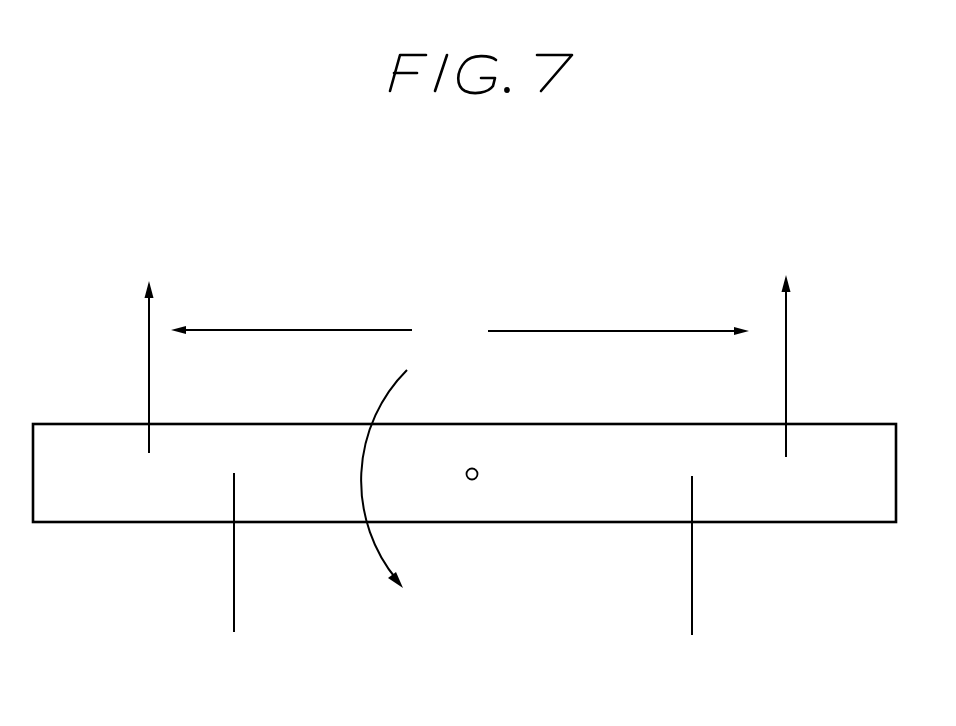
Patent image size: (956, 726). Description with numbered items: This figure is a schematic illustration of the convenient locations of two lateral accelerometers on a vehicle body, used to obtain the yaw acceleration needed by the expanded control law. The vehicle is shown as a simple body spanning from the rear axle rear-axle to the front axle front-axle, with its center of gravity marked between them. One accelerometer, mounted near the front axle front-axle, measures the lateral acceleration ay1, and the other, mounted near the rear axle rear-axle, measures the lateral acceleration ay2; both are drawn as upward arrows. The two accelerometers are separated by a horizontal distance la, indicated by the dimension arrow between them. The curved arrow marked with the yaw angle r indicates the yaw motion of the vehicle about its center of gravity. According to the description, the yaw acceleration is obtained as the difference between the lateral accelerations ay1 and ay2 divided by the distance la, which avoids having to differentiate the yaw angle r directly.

The lateral acceleration ay1 is at (818, 366).
The lateral acceleration ay2 is at (113, 367).
The horizontal distance la is at (460, 327).
The yaw angle r is at (368, 479).
The rear axle rear-axle is at (230, 576).
The front axle front-axle is at (715, 578).